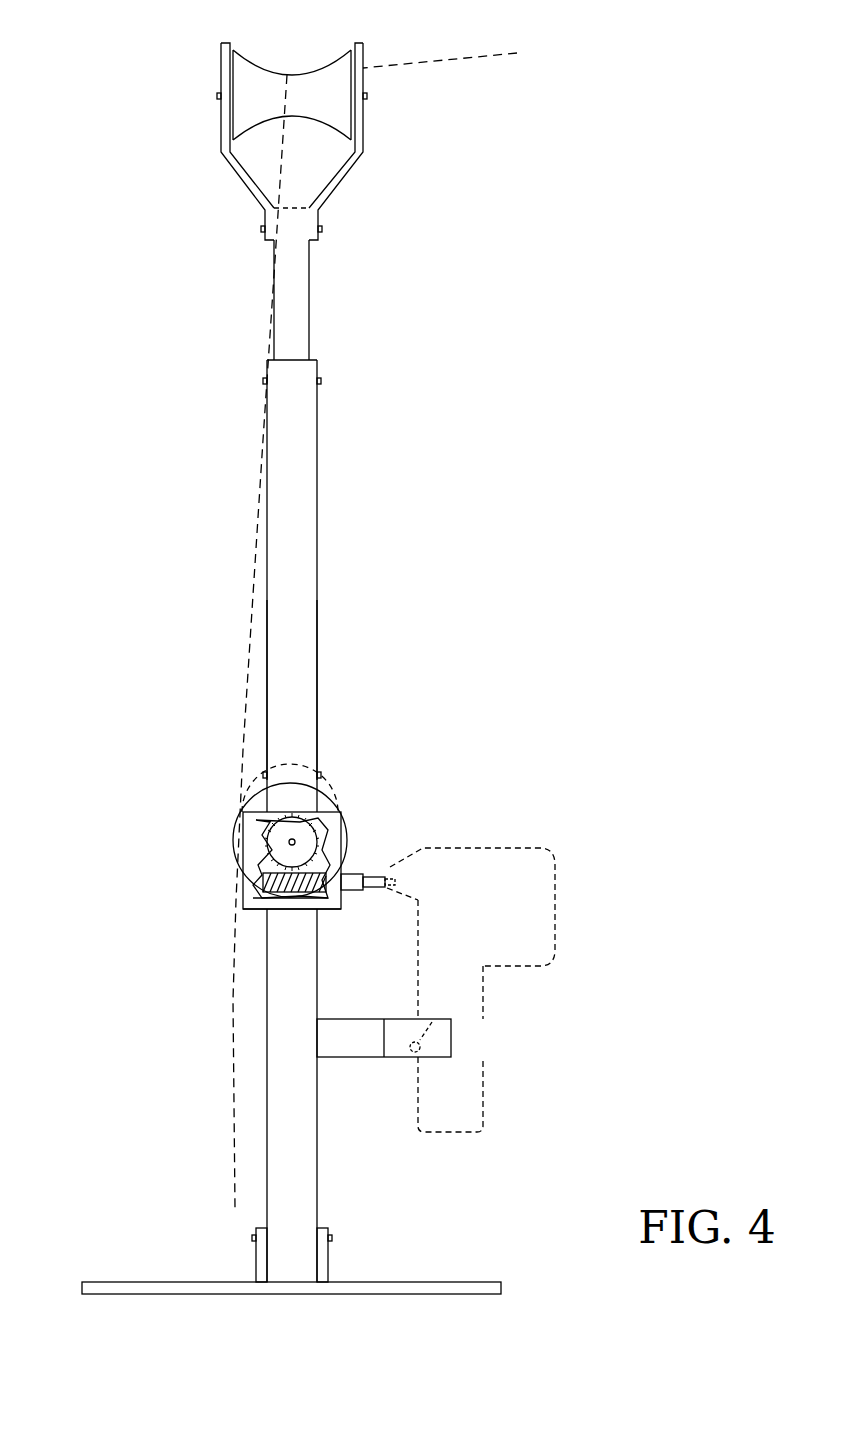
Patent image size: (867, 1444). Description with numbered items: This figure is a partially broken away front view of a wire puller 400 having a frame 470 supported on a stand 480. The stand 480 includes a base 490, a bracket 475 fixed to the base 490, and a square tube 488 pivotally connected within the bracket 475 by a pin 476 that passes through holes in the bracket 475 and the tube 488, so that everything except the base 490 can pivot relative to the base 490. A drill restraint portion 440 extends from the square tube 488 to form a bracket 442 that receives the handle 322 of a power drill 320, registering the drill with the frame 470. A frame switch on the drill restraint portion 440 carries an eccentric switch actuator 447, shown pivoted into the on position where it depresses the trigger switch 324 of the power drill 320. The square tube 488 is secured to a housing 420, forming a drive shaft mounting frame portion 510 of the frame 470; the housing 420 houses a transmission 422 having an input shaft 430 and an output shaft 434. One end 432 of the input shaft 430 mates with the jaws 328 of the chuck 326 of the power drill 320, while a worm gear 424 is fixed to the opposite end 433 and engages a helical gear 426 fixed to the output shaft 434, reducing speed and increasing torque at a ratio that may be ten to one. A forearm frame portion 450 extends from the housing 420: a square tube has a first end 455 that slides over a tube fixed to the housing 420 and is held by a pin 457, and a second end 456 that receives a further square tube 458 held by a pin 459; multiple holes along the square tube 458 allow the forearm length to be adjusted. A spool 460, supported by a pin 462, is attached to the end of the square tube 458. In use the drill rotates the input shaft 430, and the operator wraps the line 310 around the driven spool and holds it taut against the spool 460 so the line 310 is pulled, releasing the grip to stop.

The line 310 is at (517, 53).
The power drill 320 is at (563, 835).
The handle 322 is at (483, 1083).
The trigger switch 324 is at (452, 1045).
The chuck 326 is at (398, 895).
The jaws 328 is at (395, 868).
The wire puller 400 is at (752, 212).
The housing 420 is at (243, 808).
The transmission 422 is at (135, 837).
The worm gear 424 is at (300, 912).
The helical gear 426 is at (234, 848).
The input shaft 430 is at (352, 872).
The end 432 is at (398, 880).
The end 433 is at (262, 878).
The output shaft 434 is at (292, 840).
The drill restraint portion 440 is at (345, 1019).
The bracket 442 is at (384, 1057).
The switch actuator 447 is at (450, 1050).
The forearm frame portion 450 is at (317, 668).
The first end 455 is at (300, 710).
The second end 456 is at (290, 421).
The pin 457 is at (263, 774).
The square tube 458 is at (310, 298).
The pin 459 is at (321, 381).
The spool 460 is at (250, 60).
The pin 462 is at (217, 98).
The frame 470 is at (195, 546).
The bracket 475 is at (255, 1258).
The pin 476 is at (330, 1238).
The stand 480 is at (131, 1143).
The square tube 488 is at (317, 1160).
The base 490 is at (468, 1282).
The drive shaft mounting frame portion 510 is at (265, 912).